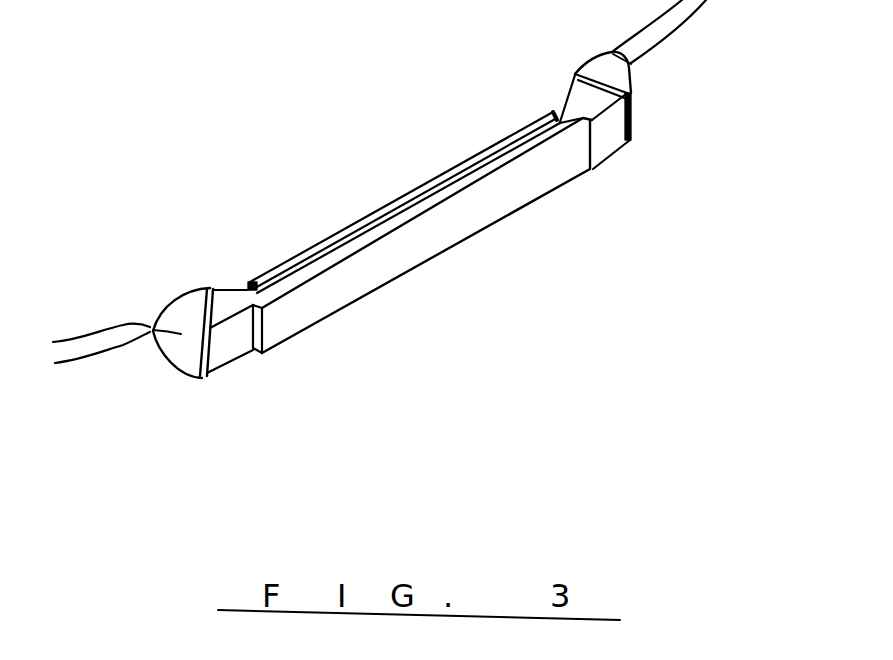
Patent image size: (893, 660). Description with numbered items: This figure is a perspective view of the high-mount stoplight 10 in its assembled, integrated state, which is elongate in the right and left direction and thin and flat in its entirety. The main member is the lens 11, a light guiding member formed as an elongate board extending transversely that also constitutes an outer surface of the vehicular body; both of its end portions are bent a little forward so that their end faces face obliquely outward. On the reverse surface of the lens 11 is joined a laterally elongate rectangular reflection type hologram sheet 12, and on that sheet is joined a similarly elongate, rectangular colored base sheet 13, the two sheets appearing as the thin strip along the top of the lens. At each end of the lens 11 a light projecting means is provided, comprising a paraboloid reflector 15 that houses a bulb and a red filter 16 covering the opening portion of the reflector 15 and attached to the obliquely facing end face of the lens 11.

The high-mount stoplight 10 is at (418, 232).
The lens 11 is at (443, 255).
The reflection type hologram sheet 12 is at (413, 205).
The colored base sheet 13 is at (335, 233).
The paraboloid reflector 15 is at (172, 345).
The red filter 16 is at (203, 375).